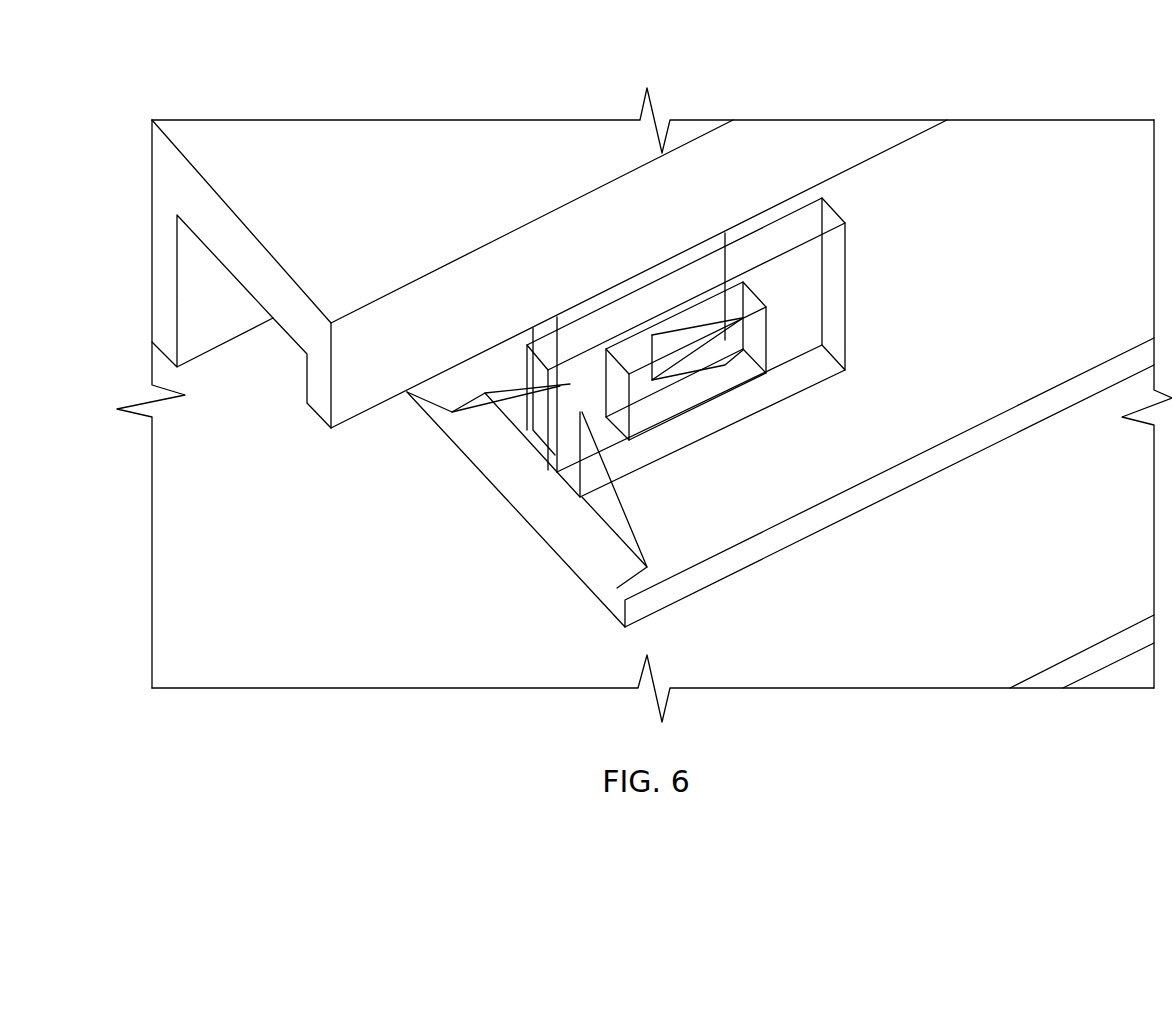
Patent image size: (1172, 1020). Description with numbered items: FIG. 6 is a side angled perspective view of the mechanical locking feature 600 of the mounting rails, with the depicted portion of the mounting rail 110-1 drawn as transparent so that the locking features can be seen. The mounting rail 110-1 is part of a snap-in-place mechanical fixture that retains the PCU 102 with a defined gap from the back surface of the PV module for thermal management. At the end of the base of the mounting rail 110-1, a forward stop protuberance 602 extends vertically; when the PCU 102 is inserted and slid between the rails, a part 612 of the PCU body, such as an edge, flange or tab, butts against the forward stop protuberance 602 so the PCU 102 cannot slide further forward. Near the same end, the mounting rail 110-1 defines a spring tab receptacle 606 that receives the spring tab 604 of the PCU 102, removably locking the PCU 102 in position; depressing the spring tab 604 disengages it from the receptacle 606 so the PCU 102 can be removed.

The optical assembly 600 is at (1062, 72).
The PCU 102 is at (313, 157).
The mounting rail 110-1 is at (1032, 412).
The forward stop protuberance 602 is at (555, 493).
The spring tab 604 is at (713, 346).
The spring tab receptacle 606 is at (677, 405).
The part of the PCU body 612 is at (578, 383).